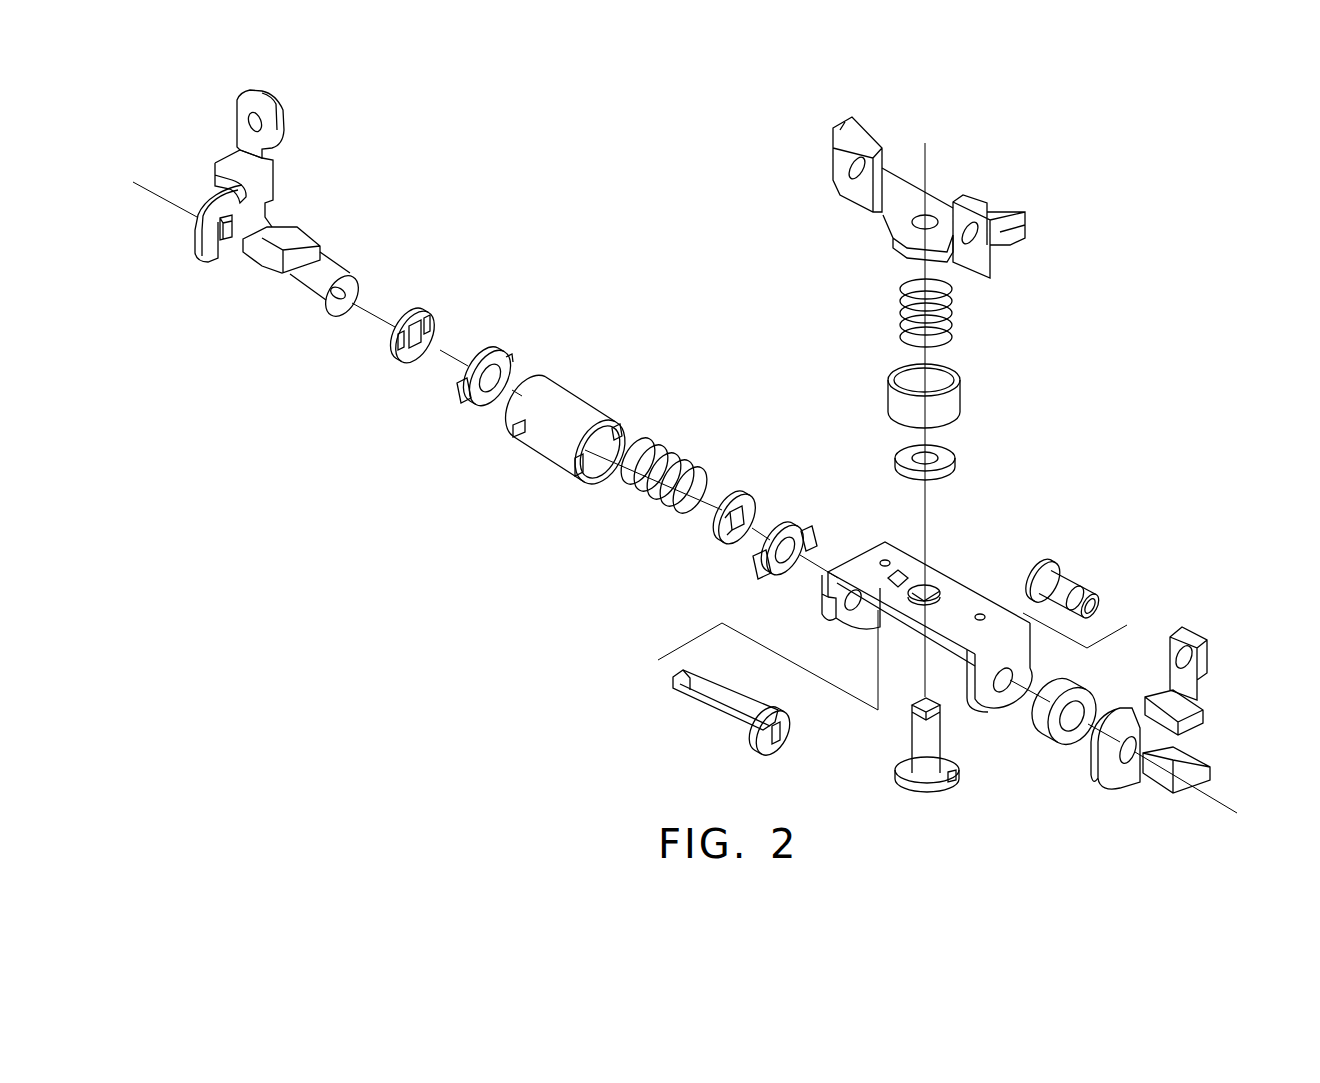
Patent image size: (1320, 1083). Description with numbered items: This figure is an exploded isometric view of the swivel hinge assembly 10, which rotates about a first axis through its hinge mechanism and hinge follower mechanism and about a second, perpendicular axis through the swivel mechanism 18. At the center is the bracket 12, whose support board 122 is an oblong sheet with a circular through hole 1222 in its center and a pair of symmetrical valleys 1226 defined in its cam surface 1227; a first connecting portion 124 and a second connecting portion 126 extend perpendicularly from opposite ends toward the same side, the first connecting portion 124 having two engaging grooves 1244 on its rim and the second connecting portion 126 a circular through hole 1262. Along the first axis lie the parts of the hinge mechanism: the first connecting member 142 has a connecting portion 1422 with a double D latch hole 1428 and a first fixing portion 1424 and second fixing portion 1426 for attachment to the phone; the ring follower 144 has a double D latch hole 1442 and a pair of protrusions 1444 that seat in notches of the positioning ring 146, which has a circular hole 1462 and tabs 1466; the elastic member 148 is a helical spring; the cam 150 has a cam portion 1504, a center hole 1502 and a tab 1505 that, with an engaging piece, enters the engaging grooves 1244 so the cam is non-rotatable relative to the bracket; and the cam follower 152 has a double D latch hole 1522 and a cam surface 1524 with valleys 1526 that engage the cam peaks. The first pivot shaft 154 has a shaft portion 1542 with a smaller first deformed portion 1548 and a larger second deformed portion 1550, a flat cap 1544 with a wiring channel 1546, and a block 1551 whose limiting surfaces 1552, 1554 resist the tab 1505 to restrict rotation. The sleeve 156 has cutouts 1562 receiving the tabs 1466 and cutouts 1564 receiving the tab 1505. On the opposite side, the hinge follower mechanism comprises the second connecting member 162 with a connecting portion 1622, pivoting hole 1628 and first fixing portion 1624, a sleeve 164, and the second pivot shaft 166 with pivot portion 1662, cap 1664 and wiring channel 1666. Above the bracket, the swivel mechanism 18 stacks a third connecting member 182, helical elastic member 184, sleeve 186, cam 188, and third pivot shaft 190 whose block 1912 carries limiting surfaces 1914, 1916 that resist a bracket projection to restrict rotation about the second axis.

The swivel hinge assembly 10 is at (506, 136).
The bracket 12 is at (892, 605).
The support board 122 is at (997, 620).
The circular through hole 1222 is at (933, 592).
The valleys 1226 is at (944, 590).
The cam surface 1227 is at (906, 560).
The first connecting portion 124 is at (851, 628).
The engaging grooves 1244 is at (832, 615).
The second connecting portion 126 is at (996, 702).
The circular through hole 1262 is at (1020, 676).
The first connecting member 142 is at (277, 204).
The connecting portion 1422 is at (213, 260).
The first fixing portion 1424 is at (258, 103).
The second fixing portion 1426 is at (336, 268).
The double D latch hole 1428 is at (226, 240).
The ring follower 144 is at (409, 330).
The double D latch hole 1442 is at (420, 352).
The protrusions 1444 is at (398, 338).
The positioning ring 146 is at (489, 372).
The circular hole 1462 is at (487, 400).
The tabs 1466 is at (460, 392).
The elastic member 148 is at (660, 460).
The cam 150 is at (836, 482).
The cam follower 152 is at (719, 519).
The center hole 1502 is at (781, 563).
The cam portion 1504 is at (752, 550).
The tab 1505 is at (760, 576).
The double D latch hole 1522 is at (738, 516).
The cam surface 1524 is at (717, 538).
The valleys 1526 is at (726, 498).
The first pivot shaft 154 is at (696, 733).
The shaft portion 1542 is at (642, 708).
The cap 1544 is at (768, 762).
The wiring channel 1546 is at (782, 758).
The first deformed portion 1548 is at (680, 696).
The second deformed portion 1550 is at (705, 710).
The block 1551 is at (770, 705).
The limiting surface 1552 is at (750, 746).
The limiting surface 1554 is at (786, 716).
The sleeve 156 is at (570, 428).
The cutouts 1562 is at (526, 432).
The cutouts 1564 is at (578, 466).
The second connecting member 162 is at (1182, 706).
The connecting portion 1622 is at (1117, 782).
The first fixing portion 1624 is at (1192, 632).
The pivoting hole 1628 is at (1130, 764).
The sleeve 164 is at (1068, 694).
The second pivot shaft 166 is at (1100, 562).
The pivot portion 1662 is at (1075, 583).
The cap 1664 is at (1055, 562).
The wiring channel 1666 is at (1092, 603).
The swivel mechanism 18 is at (994, 407).
The third connecting member 182 is at (972, 168).
The elastic member 184 is at (905, 312).
The sleeve 186 is at (960, 392).
The cam 188 is at (984, 457).
The third pivot shaft 190 is at (932, 770).
The block 1912 is at (960, 782).
The limiting surface 1914 is at (950, 790).
The limiting surface 1916 is at (905, 745).